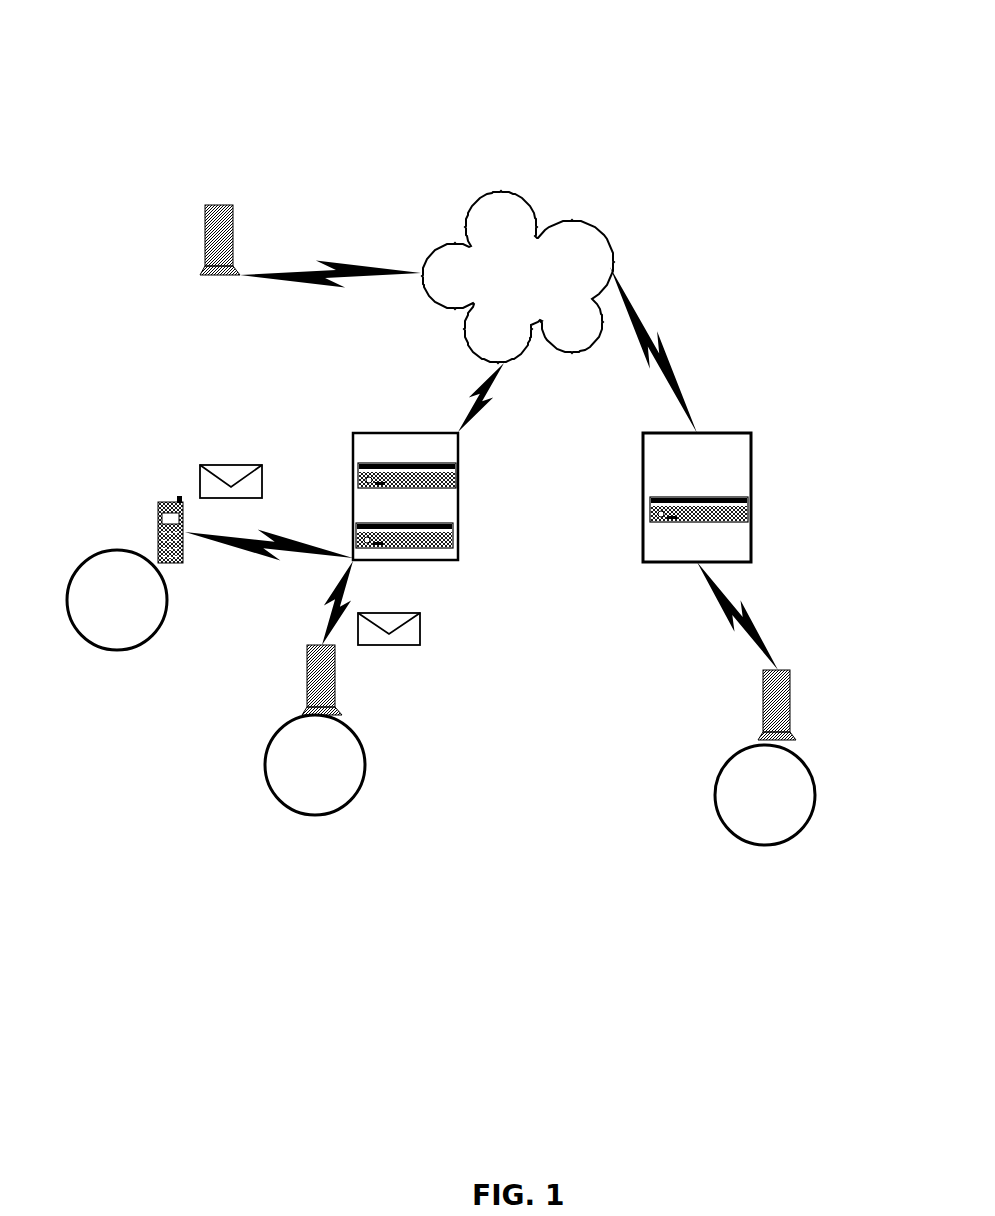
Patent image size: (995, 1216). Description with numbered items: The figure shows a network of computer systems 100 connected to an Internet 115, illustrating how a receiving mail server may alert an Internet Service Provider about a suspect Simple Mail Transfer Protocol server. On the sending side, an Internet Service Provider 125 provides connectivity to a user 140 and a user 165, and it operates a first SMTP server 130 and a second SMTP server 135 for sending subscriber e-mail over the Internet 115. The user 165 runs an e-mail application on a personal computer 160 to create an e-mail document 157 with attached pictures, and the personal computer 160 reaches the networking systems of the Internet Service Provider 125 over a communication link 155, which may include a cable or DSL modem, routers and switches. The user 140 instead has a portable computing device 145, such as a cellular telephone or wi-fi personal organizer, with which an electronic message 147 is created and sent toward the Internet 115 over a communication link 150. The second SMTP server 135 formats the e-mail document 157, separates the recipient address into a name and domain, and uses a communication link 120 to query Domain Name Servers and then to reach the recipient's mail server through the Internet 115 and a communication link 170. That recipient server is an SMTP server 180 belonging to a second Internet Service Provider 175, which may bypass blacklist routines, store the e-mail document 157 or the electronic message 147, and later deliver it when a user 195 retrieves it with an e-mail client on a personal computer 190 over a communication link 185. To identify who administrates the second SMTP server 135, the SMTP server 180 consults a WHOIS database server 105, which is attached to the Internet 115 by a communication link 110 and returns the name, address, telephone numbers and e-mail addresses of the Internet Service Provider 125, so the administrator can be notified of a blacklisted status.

The network of computer systems 100 is at (268, 113).
The WHOIS database server 105 is at (222, 205).
The communication link 110 is at (348, 265).
The Internet 115 is at (480, 200).
The communication link 120 is at (473, 385).
The Internet Service Provider 125 is at (353, 433).
The first SMTP server 130 is at (455, 467).
The second SMTP server 135 is at (453, 530).
The user 140 is at (97, 552).
The portable computing device 145 is at (158, 502).
The electronic message 147 is at (200, 465).
The communication link 150 is at (263, 553).
The communication link 155 is at (325, 633).
The e-mail document 157 is at (420, 622).
The personal computer 160 is at (307, 687).
The user 165 is at (363, 742).
The communication link 170 is at (665, 342).
The Internet Service Provider 175 is at (643, 443).
The SMTP server 180 is at (748, 505).
The communication link 185 is at (750, 613).
The personal computer 190 is at (792, 707).
The user 195 is at (810, 772).